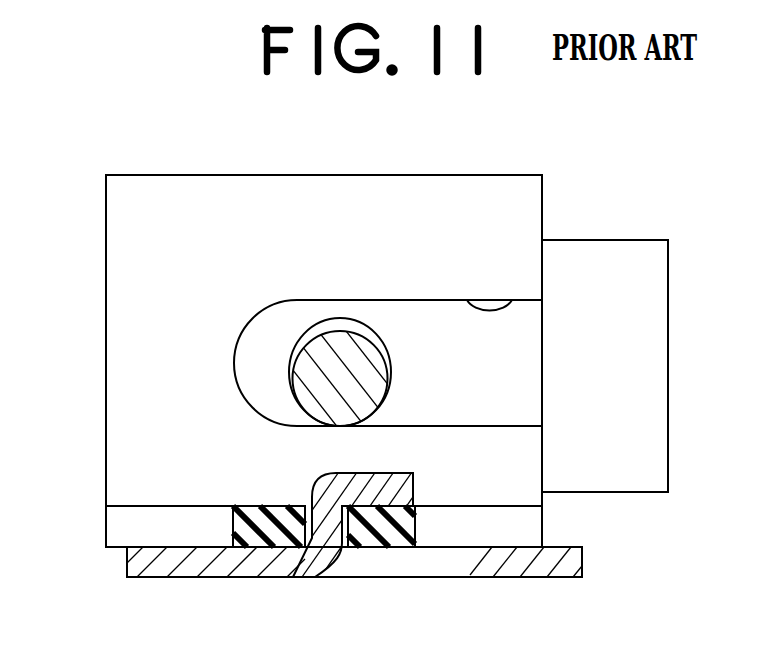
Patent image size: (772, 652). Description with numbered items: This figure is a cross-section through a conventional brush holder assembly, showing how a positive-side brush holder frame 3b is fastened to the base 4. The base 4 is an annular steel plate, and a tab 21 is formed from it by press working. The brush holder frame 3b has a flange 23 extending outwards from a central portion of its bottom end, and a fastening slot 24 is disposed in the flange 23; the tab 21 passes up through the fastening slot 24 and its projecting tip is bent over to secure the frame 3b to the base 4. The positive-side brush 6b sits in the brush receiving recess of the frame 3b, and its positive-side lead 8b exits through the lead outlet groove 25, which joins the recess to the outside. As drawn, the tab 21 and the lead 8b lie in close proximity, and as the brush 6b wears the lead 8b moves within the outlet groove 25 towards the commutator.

The brush holder frame 3b is at (163, 243).
The positive-side lead 8b is at (363, 328).
The lead outlet groove 25 is at (512, 300).
The positive-side brush 6b is at (645, 282).
The tab 21 is at (393, 472).
The fastening slot 24 is at (273, 544).
The flange 23 is at (367, 533).
The base 4 is at (403, 560).